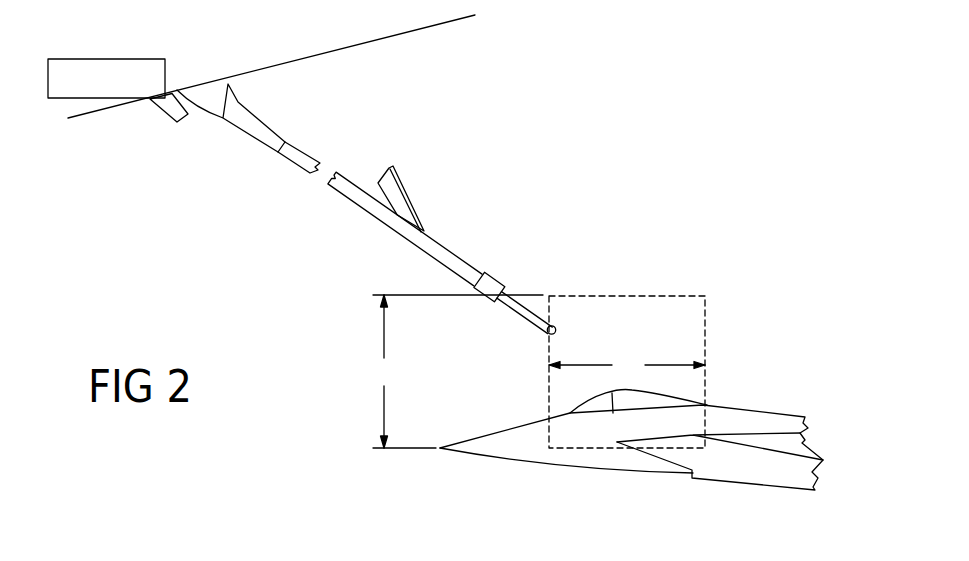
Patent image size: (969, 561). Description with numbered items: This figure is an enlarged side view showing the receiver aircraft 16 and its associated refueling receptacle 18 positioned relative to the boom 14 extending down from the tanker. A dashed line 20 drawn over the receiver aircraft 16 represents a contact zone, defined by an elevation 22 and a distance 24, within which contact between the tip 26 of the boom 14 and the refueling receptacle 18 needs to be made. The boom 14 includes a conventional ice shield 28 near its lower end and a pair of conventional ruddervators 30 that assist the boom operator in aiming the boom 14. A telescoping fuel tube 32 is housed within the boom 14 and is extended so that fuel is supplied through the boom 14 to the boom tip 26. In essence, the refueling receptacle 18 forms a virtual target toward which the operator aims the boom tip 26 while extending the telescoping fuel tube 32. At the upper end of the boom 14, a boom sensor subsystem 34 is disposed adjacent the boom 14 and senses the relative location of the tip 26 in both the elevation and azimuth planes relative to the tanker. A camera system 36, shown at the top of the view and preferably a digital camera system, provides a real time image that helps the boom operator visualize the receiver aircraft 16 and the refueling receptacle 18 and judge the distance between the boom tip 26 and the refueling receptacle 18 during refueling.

The boom 14 is at (466, 229).
The receiver aircraft 16 is at (747, 472).
The refueling receptacle 18 is at (762, 433).
The dashed line 20 is at (600, 296).
The elevation 22 is at (457, 371).
The distance 24 is at (627, 366).
The tip 26 is at (556, 332).
The ice shield 28 is at (492, 280).
The ruddervators 30 is at (400, 202).
The telescoping fuel tube 32 is at (532, 315).
The boom sensor subsystem 34 is at (223, 93).
The camera system 36 is at (98, 59).